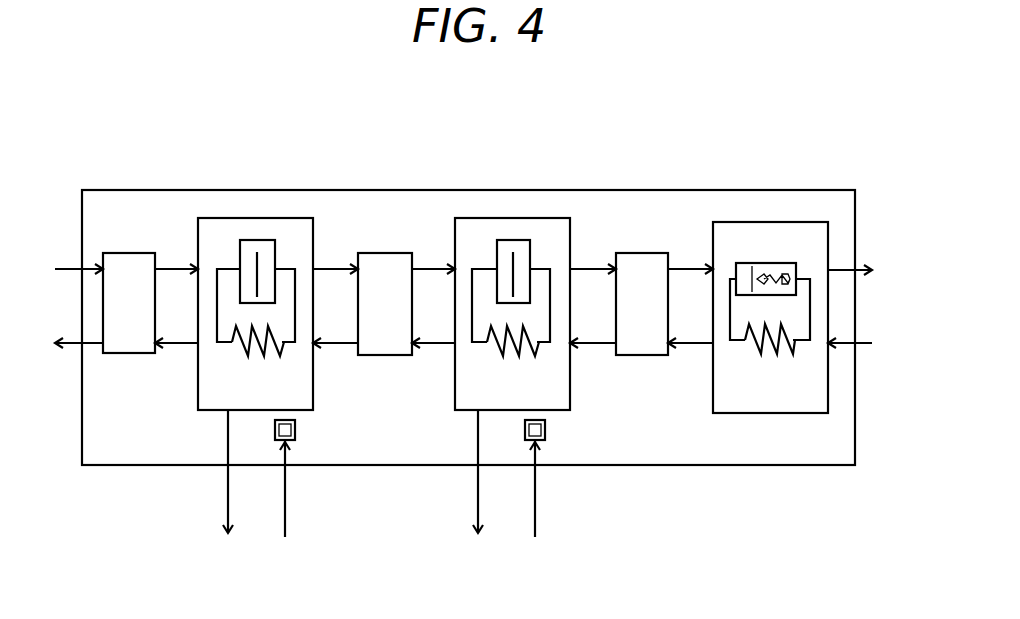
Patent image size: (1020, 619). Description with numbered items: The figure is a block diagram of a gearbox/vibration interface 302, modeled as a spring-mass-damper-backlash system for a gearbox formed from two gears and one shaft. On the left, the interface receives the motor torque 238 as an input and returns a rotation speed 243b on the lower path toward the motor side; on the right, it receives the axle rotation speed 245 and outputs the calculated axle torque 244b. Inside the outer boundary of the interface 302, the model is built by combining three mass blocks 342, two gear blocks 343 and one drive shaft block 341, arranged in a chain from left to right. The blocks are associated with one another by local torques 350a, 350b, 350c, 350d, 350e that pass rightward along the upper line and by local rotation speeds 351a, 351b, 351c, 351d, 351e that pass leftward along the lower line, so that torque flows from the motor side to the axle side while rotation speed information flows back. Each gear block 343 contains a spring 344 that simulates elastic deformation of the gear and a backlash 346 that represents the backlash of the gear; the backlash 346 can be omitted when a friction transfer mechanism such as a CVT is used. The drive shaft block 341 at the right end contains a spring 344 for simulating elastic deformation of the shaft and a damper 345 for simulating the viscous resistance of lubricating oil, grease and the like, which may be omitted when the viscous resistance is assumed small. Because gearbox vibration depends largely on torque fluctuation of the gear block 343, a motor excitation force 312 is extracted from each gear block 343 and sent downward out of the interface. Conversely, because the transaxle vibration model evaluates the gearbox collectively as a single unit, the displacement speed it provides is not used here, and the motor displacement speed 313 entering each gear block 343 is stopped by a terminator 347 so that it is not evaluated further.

The motor torque 238 is at (60, 262).
The return pipe 243b is at (62, 340).
The axle torque 244b is at (868, 263).
The axle rotation speed 245 is at (868, 339).
The gearbox/vibration interface 302 is at (855, 465).
The motor excitation force 312 is at (222, 540).
The motor displacement speed 313 is at (288, 540).
The drive shaft block 341 is at (815, 222).
The mass block 342 is at (142, 253).
The gear block 343 is at (297, 218).
The spring 344 is at (268, 360).
The damper 345 is at (745, 263).
The backlash 346 is at (250, 240).
The terminator 347 is at (275, 440).
The local torque 350a is at (175, 269).
The local torque 350b is at (327, 269).
The local torque 350c is at (430, 269).
The local torque 350d is at (585, 269).
The local torque 350e is at (690, 269).
The local rotation speed 351a is at (170, 350).
The local rotation speed 351b is at (330, 350).
The local rotation speed 351c is at (430, 350).
The local rotation speed 351d is at (595, 350).
The local rotation speed 351e is at (690, 350).